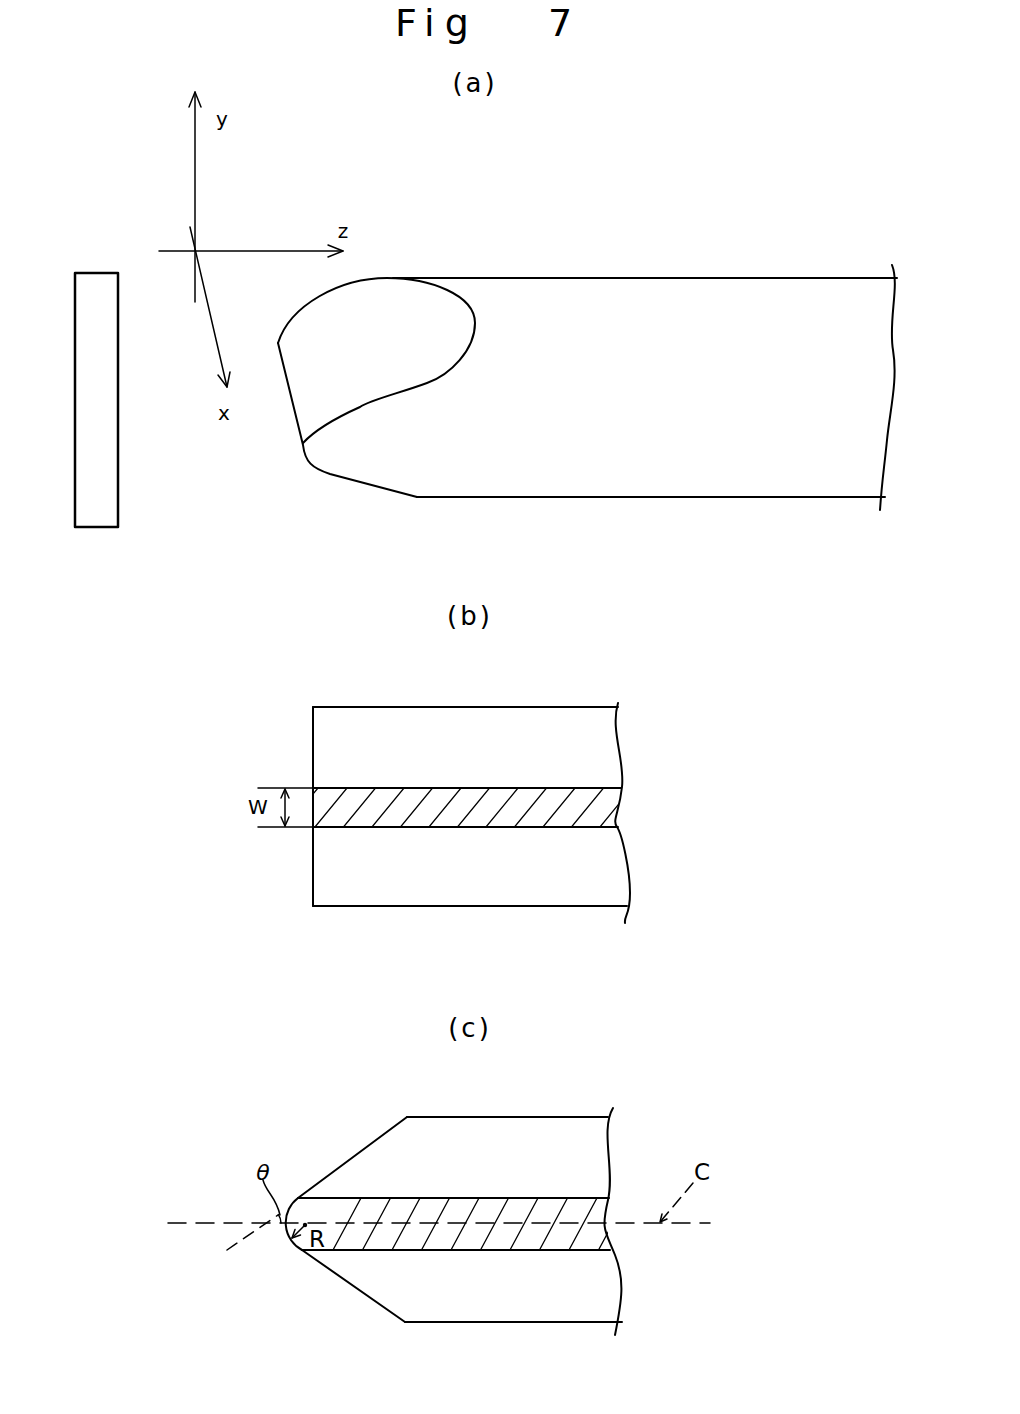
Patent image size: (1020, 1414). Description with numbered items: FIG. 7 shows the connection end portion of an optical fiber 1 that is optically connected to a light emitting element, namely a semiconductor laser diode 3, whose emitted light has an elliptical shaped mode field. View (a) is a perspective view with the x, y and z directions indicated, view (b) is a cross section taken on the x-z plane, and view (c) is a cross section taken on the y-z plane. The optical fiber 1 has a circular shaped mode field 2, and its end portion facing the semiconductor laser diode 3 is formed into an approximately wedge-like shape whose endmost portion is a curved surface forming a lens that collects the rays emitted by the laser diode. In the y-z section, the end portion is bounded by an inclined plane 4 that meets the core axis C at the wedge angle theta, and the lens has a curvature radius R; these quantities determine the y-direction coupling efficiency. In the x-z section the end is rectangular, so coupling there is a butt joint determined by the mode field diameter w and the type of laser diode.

The optical fiber 1 is at (693, 262).
The mode field 2 is at (453, 800).
The semiconductor laser diode 3 is at (110, 483).
The inclined plane 4 is at (377, 323).